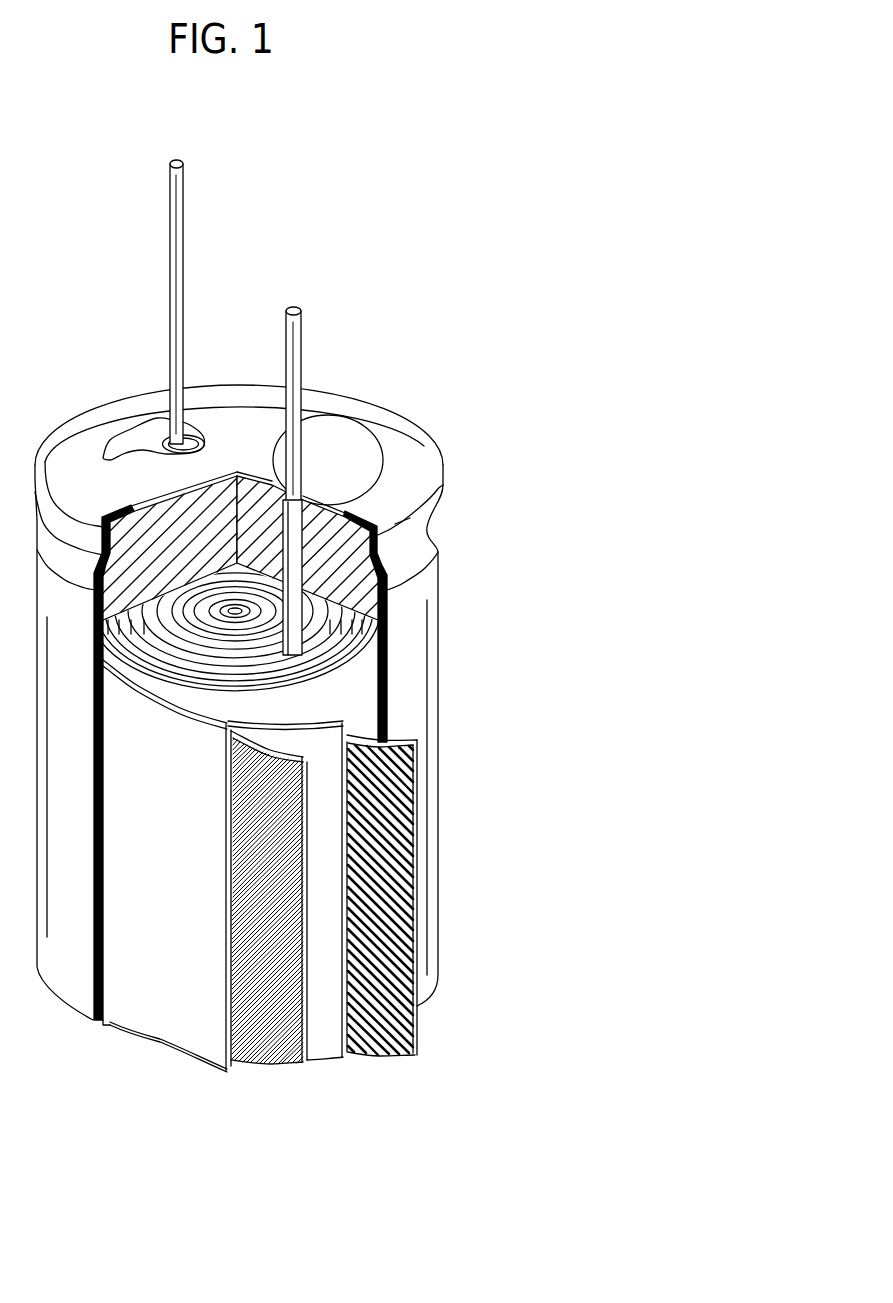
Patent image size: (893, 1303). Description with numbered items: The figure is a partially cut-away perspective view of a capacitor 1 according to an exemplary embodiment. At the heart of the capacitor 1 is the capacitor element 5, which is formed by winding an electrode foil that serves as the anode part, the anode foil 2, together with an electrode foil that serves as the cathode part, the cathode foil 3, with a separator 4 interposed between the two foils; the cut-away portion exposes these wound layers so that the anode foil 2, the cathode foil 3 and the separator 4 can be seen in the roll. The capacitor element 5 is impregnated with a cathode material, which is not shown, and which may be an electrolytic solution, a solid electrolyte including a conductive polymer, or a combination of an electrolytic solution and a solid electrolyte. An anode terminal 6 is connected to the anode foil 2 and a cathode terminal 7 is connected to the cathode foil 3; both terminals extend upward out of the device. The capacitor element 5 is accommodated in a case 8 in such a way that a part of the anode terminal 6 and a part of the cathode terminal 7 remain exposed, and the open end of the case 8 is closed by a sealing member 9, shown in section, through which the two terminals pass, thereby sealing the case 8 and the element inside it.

The capacitor 1 is at (480, 265).
The anode foil 2 is at (273, 1037).
The cathode foil 3 is at (382, 1035).
The separator 4 is at (160, 1030).
The capacitor element 5 is at (360, 700).
The anode terminal 6 is at (173, 258).
The cathode terminal 7 is at (297, 347).
The case 8 is at (408, 642).
The sealing member 9 is at (357, 467).